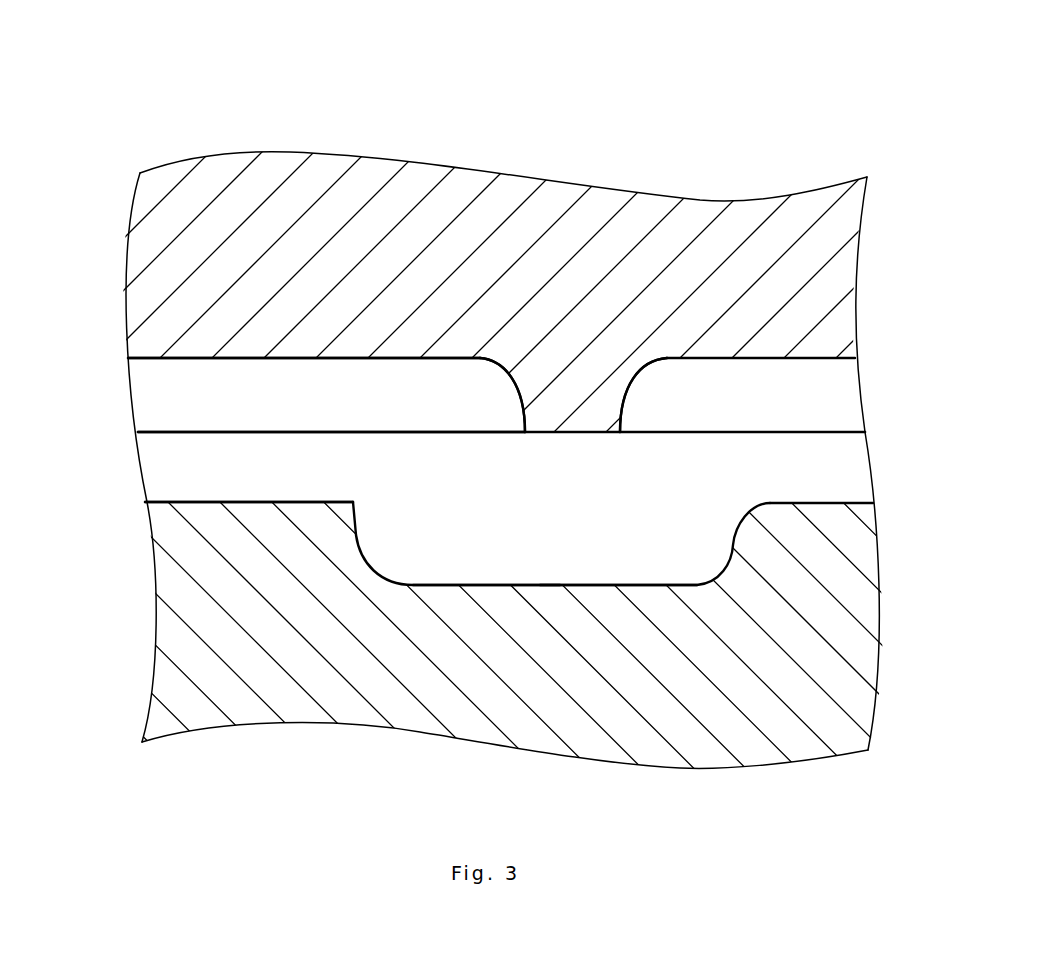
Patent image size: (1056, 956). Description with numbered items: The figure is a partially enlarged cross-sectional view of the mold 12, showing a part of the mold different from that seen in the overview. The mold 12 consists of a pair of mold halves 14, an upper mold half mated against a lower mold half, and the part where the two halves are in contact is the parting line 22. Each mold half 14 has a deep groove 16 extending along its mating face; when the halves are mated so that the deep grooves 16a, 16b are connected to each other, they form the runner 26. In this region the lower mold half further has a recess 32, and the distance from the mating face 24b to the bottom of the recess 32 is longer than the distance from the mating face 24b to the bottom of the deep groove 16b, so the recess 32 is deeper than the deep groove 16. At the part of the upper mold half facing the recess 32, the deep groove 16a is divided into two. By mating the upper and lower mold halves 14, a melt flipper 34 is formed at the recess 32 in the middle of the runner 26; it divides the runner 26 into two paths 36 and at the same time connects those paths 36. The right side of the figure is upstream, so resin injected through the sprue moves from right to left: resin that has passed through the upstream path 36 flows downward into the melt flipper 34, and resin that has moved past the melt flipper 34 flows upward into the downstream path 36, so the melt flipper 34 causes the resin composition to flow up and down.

The mold 12 is at (944, 47).
The mold half 14 is at (857, 253).
The deep groove 16 is at (815, 358).
The deep groove 16a is at (162, 358).
The deep groove 16b is at (190, 502).
The parting line 22 is at (867, 433).
The mating face 24b is at (166, 432).
The runner 26 is at (822, 73).
The path 36 is at (423, 358).
The recess 32 is at (432, 585).
The melt flipper 34 is at (550, 585).